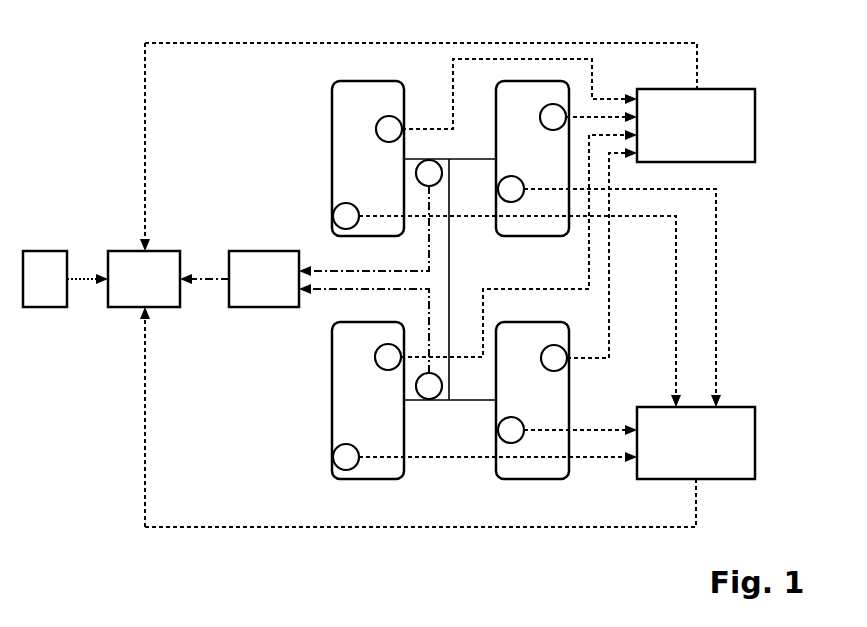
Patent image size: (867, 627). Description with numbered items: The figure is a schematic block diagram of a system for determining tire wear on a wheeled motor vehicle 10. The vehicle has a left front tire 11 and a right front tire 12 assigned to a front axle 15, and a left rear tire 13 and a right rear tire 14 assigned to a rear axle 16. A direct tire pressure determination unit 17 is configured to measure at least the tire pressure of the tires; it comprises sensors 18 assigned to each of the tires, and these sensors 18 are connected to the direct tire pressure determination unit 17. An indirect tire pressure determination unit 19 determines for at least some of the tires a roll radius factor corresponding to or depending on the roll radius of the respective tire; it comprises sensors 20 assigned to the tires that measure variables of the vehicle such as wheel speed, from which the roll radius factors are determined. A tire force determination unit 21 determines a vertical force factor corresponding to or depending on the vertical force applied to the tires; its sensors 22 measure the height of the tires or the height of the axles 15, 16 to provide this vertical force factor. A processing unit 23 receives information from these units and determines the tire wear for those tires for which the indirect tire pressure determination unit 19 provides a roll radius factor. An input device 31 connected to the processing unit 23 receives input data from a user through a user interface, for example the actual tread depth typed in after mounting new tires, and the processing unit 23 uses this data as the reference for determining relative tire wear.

The motor vehicle 10 is at (278, 115).
The left front tire 11 is at (332, 140).
The right front tire 12 is at (519, 81).
The left rear tire 13 is at (332, 403).
The right rear tire 14 is at (548, 480).
The front axle 15 is at (470, 159).
The rear axle 16 is at (465, 400).
The direct tire pressure determination unit 17 is at (720, 89).
The sensors 18 is at (388, 116).
The indirect tire pressure determination unit 19 is at (742, 407).
The sensors 20 is at (334, 216).
The tire force determination unit 21 is at (248, 308).
The sensors 22 is at (428, 173).
The processing unit 23 is at (126, 308).
The input device 31 is at (43, 308).